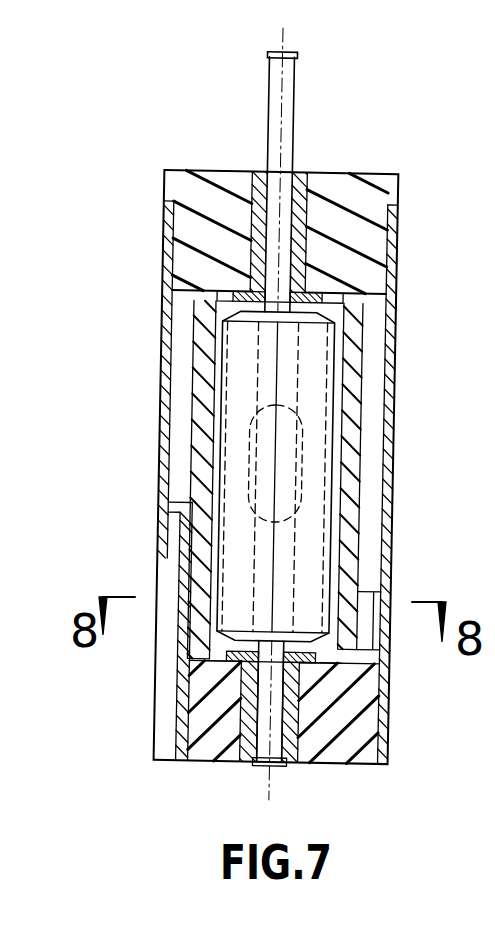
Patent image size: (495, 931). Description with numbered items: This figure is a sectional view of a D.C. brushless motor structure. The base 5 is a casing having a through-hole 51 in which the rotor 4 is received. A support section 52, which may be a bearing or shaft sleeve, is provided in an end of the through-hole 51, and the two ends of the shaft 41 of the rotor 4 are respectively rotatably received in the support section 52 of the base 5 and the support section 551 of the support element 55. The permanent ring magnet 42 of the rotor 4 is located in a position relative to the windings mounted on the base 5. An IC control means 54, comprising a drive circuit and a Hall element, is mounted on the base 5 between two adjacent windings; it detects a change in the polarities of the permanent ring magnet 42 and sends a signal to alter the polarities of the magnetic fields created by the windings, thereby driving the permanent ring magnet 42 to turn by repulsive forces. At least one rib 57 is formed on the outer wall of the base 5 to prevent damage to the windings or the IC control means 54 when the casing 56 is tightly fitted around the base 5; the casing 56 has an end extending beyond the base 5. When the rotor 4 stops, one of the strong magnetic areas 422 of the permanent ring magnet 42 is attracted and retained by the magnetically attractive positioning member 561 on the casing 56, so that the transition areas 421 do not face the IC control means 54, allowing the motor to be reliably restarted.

The rotor 4 is at (271, 454).
The base 5 is at (393, 436).
The shaft 41 is at (269, 103).
The permanent ring magnet 42 is at (316, 526).
The transition areas 421 is at (250, 553).
The strong magnetic areas 422 is at (222, 570).
The through-hole 51 is at (380, 293).
The support section 52 is at (288, 763).
The IC control means 54 is at (365, 622).
The support element 55 is at (385, 172).
The support section 551 is at (306, 170).
The casing 56 is at (396, 337).
The magnetically attractive positioning member 561 is at (180, 665).
The rib 57 is at (372, 393).